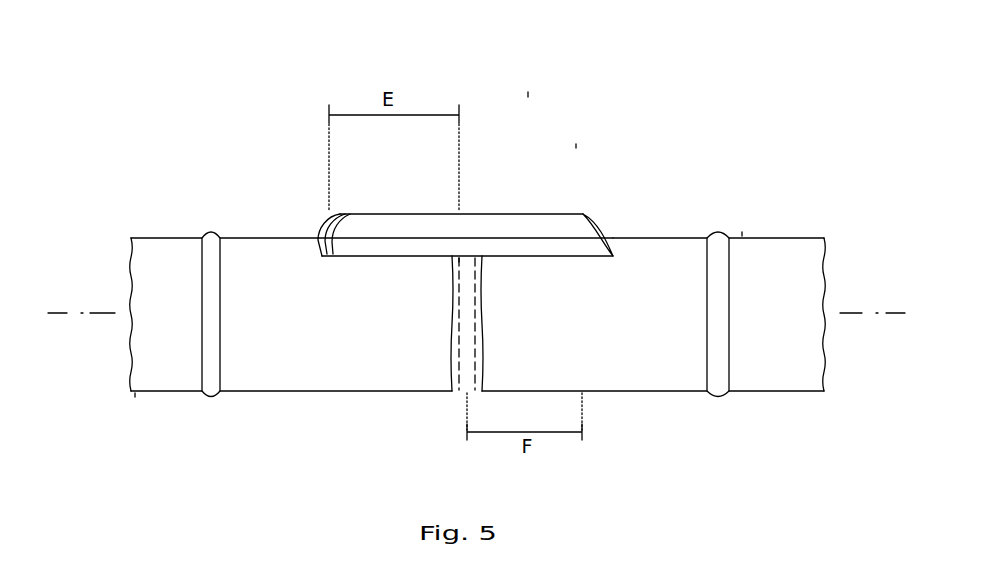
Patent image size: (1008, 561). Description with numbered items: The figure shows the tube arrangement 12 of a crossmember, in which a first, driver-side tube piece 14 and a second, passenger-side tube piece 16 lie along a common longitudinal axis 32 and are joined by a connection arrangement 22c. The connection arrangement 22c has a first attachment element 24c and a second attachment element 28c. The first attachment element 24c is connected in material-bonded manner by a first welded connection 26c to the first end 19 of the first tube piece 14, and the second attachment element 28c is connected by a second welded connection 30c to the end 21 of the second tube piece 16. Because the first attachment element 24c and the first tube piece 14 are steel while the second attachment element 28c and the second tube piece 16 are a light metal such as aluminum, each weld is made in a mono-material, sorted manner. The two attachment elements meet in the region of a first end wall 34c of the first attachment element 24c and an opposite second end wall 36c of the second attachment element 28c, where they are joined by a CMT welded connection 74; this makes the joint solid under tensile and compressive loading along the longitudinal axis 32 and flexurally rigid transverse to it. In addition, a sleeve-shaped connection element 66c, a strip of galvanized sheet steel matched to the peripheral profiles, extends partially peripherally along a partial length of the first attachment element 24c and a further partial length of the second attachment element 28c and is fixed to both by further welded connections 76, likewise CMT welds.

The tube arrangement 12 is at (528, 93).
The first tube piece 14 is at (163, 247).
The second tube piece 16 is at (785, 247).
The first end 19 is at (135, 400).
The end 21 is at (742, 228).
The connection arrangement 22c is at (576, 144).
The first attachment element 24c is at (272, 250).
The first welded connection 26c is at (208, 394).
The second attachment element 28c is at (655, 245).
The second welded connection 30c is at (713, 394).
The longitudinal axis 32 is at (100, 308).
The first end wall 34c is at (457, 355).
The second end wall 36c is at (482, 275).
The sleeve-shaped connection element 66c is at (518, 233).
The CMT welded connection 74 is at (458, 268).
The further welded connections 76 is at (325, 240).